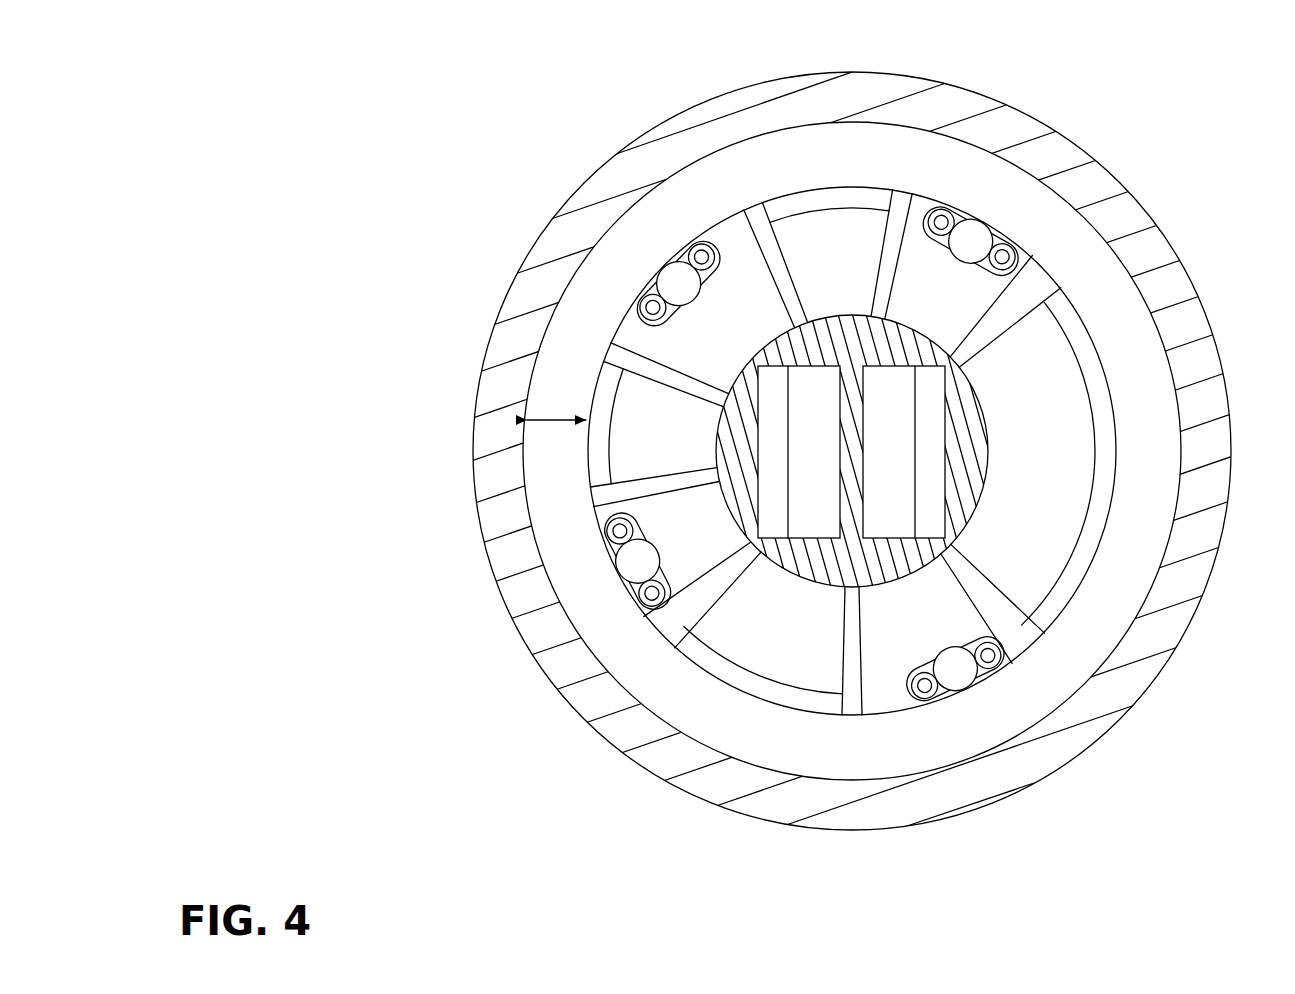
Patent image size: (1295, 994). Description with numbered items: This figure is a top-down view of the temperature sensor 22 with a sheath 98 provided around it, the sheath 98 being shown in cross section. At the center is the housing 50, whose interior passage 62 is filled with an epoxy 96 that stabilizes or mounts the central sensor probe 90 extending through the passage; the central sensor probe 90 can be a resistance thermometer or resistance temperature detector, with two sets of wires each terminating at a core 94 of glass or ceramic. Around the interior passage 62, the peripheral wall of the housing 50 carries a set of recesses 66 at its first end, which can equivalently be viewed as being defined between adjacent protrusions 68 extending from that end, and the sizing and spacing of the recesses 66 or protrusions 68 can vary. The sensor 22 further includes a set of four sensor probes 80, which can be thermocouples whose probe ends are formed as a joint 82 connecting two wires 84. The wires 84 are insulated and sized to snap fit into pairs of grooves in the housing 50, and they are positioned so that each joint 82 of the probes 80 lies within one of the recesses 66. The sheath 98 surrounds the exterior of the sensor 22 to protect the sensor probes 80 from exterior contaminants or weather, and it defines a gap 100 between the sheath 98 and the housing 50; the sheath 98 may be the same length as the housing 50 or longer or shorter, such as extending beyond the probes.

The sensor 22 is at (836, 456).
The housing 50 is at (1119, 410).
The interior passage 62 is at (846, 463).
The recesses 66 is at (703, 363).
The protrusions 68 is at (816, 288).
The sensor probes 80 is at (962, 706).
The joint 82 is at (670, 278).
The wires 84 is at (700, 248).
The central sensor probe 90 is at (812, 522).
The core 94 is at (888, 383).
The epoxy 96 is at (957, 512).
The sheath 98 is at (1018, 117).
The gap 100 is at (558, 421).